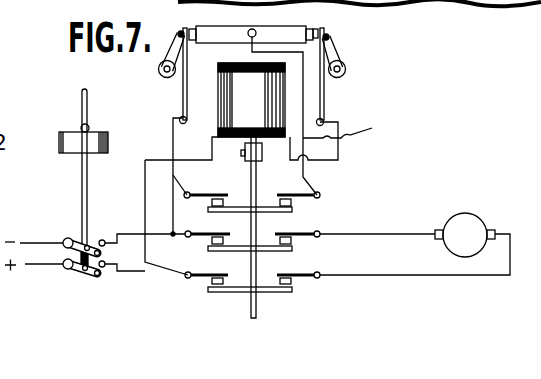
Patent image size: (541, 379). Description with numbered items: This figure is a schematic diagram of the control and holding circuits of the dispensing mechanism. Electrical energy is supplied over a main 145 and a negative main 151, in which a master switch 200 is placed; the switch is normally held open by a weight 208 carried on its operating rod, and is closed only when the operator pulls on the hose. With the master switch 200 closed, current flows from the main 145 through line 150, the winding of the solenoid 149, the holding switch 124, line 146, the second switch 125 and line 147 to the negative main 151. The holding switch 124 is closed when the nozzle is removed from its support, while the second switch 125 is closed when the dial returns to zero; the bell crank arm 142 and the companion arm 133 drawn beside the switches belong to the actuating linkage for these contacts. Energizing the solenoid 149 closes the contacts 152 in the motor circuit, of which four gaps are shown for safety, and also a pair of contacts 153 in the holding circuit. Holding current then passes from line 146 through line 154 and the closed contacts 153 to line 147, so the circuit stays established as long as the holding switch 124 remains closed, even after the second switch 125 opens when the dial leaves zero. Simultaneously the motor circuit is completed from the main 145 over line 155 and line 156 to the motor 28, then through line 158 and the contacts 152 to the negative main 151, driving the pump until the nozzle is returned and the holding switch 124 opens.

The motor 28 is at (472, 217).
The holding switch 124 is at (318, 27).
The second switch 125 is at (186, 25).
The right pulley arm 133 is at (333, 50).
The switch actuating bell crank arm 142 is at (163, 50).
The main 145 is at (40, 268).
The line 146 is at (280, 26).
The line 147 is at (173, 135).
The solenoid 149 is at (238, 97).
The line 150 is at (156, 158).
The negative main 151 is at (52, 222).
The contacts 152 is at (400, 4).
The contacts 153 is at (296, 203).
The line 154 is at (356, 130).
The line 155 is at (138, 274).
The line 156 is at (383, 276).
The line 158 is at (415, 233).
The master switch 200 is at (95, 238).
The weight 208 is at (60, 140).